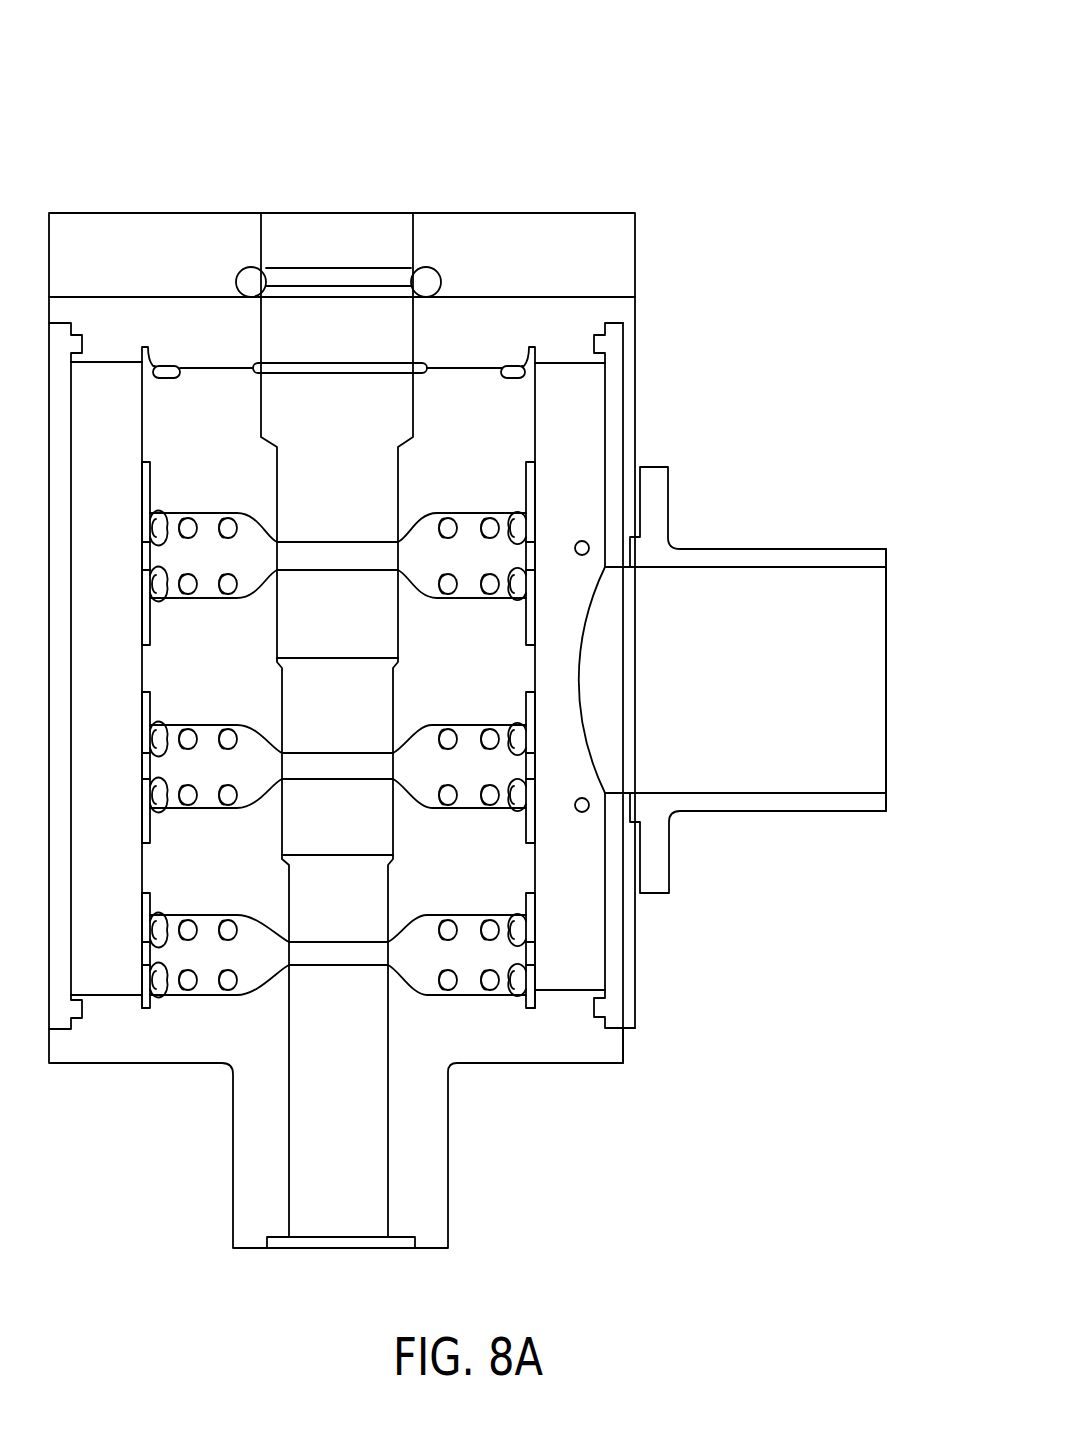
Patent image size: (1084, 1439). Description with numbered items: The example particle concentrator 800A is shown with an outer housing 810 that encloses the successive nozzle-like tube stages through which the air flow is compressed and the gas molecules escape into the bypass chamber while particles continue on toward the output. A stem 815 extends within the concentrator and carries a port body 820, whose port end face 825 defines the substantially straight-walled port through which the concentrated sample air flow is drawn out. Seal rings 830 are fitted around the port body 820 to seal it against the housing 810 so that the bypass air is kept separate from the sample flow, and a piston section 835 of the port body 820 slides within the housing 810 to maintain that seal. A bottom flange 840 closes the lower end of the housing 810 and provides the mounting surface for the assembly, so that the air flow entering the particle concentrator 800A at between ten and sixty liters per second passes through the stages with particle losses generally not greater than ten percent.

The particle concentrator 800A is at (532, 68).
The housing 810 is at (535, 222).
The stem 815 is at (340, 222).
The port body 820 is at (805, 648).
The port end face 825 is at (887, 685).
The seal rings 830 is at (470, 515).
The piston section 835 is at (297, 487).
The bottom flange 840 is at (343, 1222).